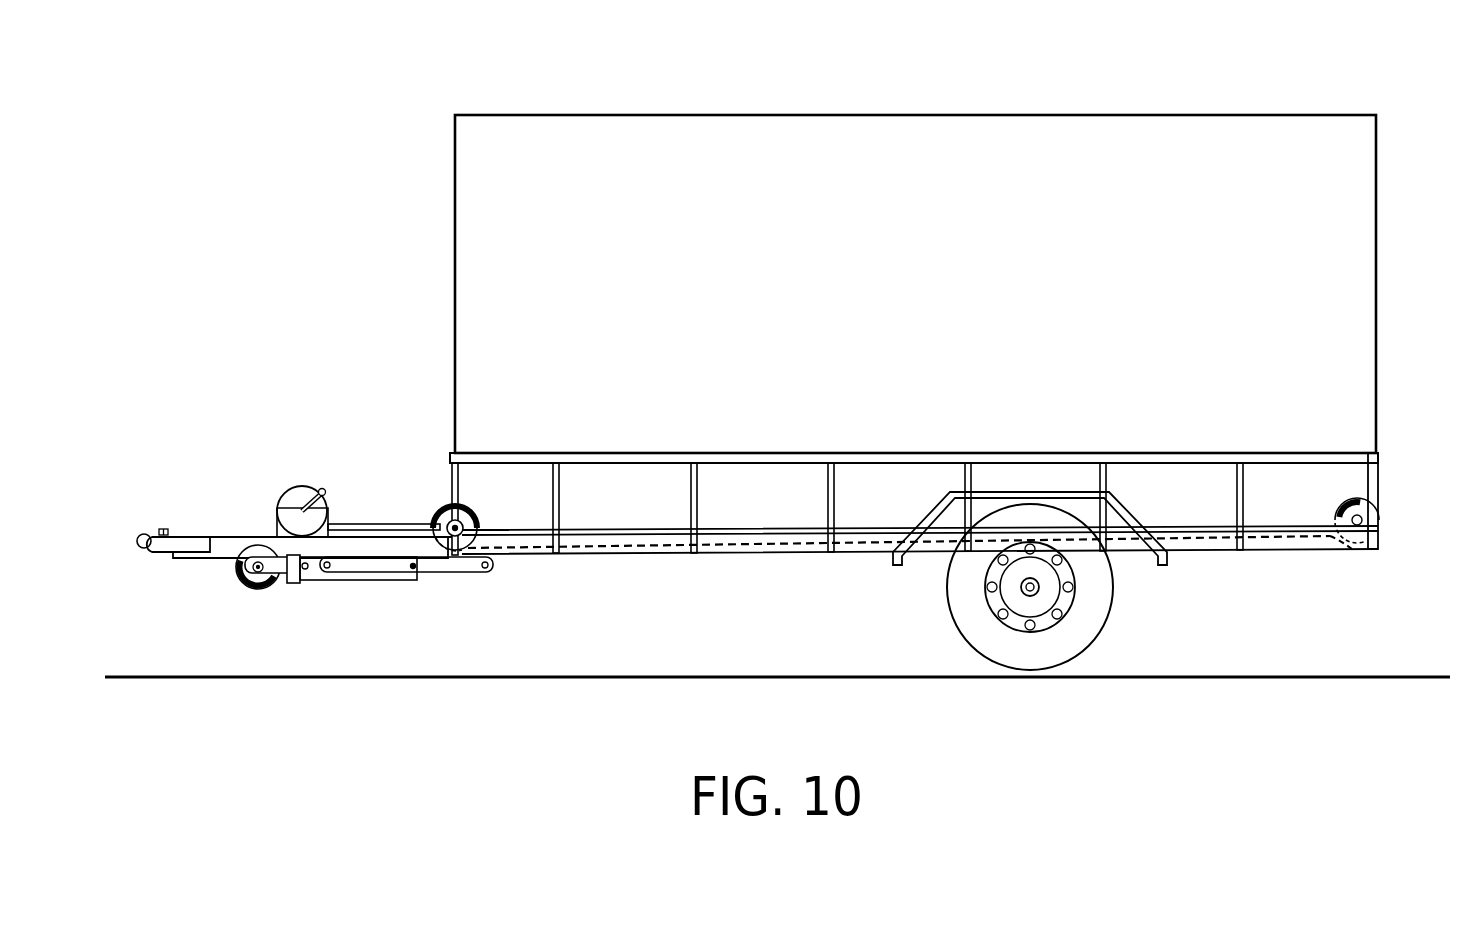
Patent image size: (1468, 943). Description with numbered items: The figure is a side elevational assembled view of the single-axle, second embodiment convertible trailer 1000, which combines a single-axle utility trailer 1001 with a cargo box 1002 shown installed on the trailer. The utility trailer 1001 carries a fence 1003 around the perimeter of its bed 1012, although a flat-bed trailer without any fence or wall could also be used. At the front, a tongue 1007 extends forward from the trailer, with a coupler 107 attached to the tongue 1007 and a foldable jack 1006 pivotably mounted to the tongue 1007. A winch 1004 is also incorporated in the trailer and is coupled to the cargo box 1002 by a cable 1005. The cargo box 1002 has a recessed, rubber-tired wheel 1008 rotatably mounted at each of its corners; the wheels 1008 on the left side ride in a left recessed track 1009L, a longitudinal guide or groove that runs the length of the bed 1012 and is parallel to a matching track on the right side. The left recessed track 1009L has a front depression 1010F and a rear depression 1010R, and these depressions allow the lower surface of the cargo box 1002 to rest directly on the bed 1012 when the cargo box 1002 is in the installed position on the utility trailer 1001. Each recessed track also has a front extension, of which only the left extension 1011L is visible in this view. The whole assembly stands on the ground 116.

The convertible trailer 1000 is at (395, 212).
The utility trailer 1001 is at (1154, 600).
The cargo box 1002 is at (852, 148).
The fence 1003 is at (488, 462).
The winch 1004 is at (297, 497).
The cable 1005 is at (348, 527).
The foldable jack 1006 is at (306, 574).
The tongue 1007 is at (220, 560).
The coupler 107 is at (148, 532).
The rubber-tired wheel 1008 is at (447, 512).
The left recessed track 1009L is at (846, 546).
The front depression 1010F is at (463, 558).
The rear depression 1010R is at (1353, 551).
The left extension 1011L is at (453, 558).
The bed 1012 is at (721, 546).
The ground 116 is at (932, 672).